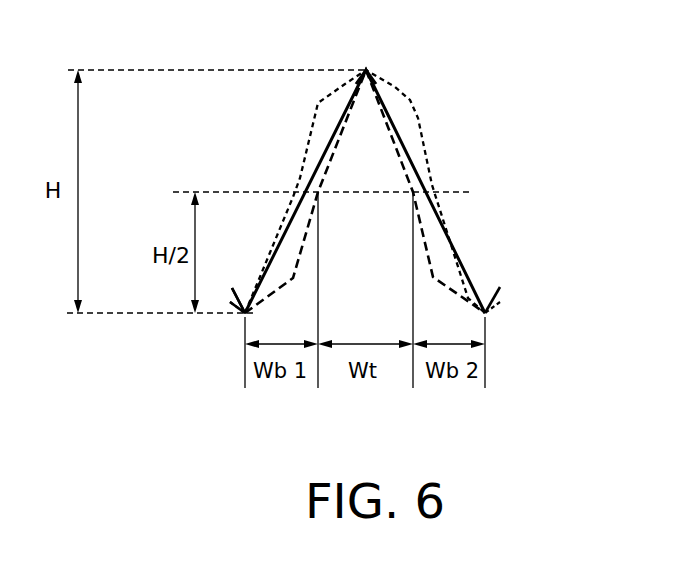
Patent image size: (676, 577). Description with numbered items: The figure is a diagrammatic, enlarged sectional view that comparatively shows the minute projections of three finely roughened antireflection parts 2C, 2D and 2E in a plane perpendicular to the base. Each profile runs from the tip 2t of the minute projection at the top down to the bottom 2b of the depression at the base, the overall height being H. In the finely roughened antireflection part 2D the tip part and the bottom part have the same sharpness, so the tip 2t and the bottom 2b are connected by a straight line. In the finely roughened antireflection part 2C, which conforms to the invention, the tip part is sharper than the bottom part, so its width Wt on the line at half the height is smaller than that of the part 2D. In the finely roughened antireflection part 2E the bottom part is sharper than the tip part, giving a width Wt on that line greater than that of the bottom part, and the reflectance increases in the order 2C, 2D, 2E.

The tip of the minute projection 2t is at (366, 70).
The finely roughened antireflection part 2E is at (424, 121).
The finely roughened antireflection part 2D is at (432, 203).
The finely roughened antireflection part 2C is at (433, 264).
The bottom of the depression 2b is at (492, 292).